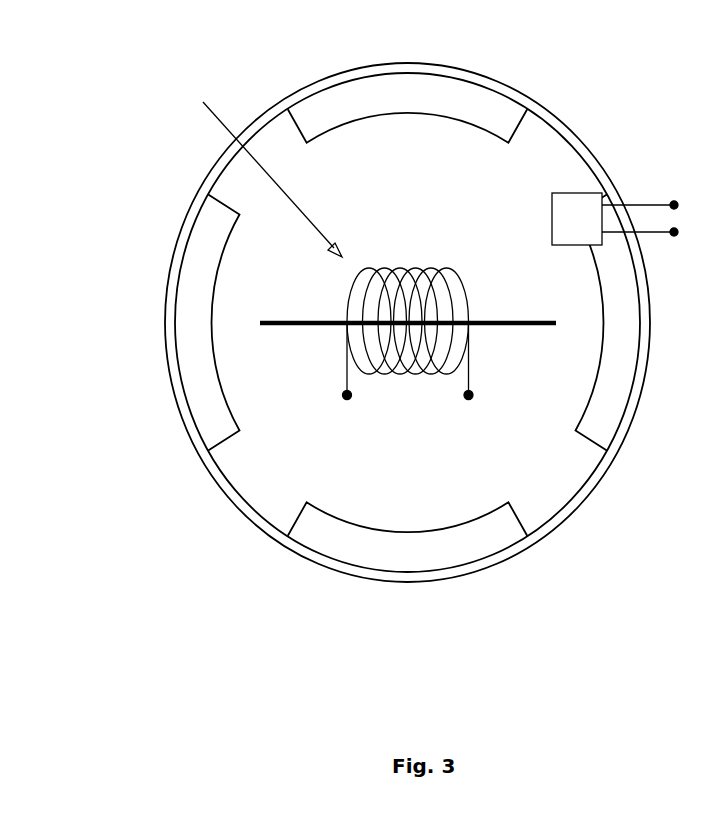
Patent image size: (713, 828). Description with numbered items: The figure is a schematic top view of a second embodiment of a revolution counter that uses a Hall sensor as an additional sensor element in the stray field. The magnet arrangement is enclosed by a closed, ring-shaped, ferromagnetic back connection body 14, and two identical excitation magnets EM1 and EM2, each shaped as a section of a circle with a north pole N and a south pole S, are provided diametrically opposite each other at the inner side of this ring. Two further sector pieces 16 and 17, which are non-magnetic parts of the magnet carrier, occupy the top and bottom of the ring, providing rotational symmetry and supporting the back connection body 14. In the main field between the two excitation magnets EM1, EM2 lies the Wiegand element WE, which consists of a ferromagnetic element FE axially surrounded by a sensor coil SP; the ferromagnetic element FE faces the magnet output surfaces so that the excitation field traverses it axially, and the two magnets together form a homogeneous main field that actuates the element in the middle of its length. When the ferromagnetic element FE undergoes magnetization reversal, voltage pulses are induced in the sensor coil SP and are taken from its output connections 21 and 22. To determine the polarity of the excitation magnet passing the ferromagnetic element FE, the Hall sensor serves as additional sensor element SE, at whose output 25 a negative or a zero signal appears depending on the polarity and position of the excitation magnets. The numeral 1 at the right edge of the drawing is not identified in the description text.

The ferromagnetic back connection body 14 is at (268, 118).
The sector piece 17 is at (415, 95).
The sector piece 16 is at (420, 553).
The excitation magnet EM1 is at (195, 290).
The excitation magnet EM2 is at (618, 382).
The additional sensor element SE is at (572, 213).
The output 25 is at (657, 218).
The ferromagnetic element FE is at (497, 325).
The sensor coil SP is at (437, 285).
The output connection 21 is at (351, 379).
The output connection 22 is at (471, 379).
The Wiegand element WE is at (258, 169).
The actuator 1 is at (707, 378).